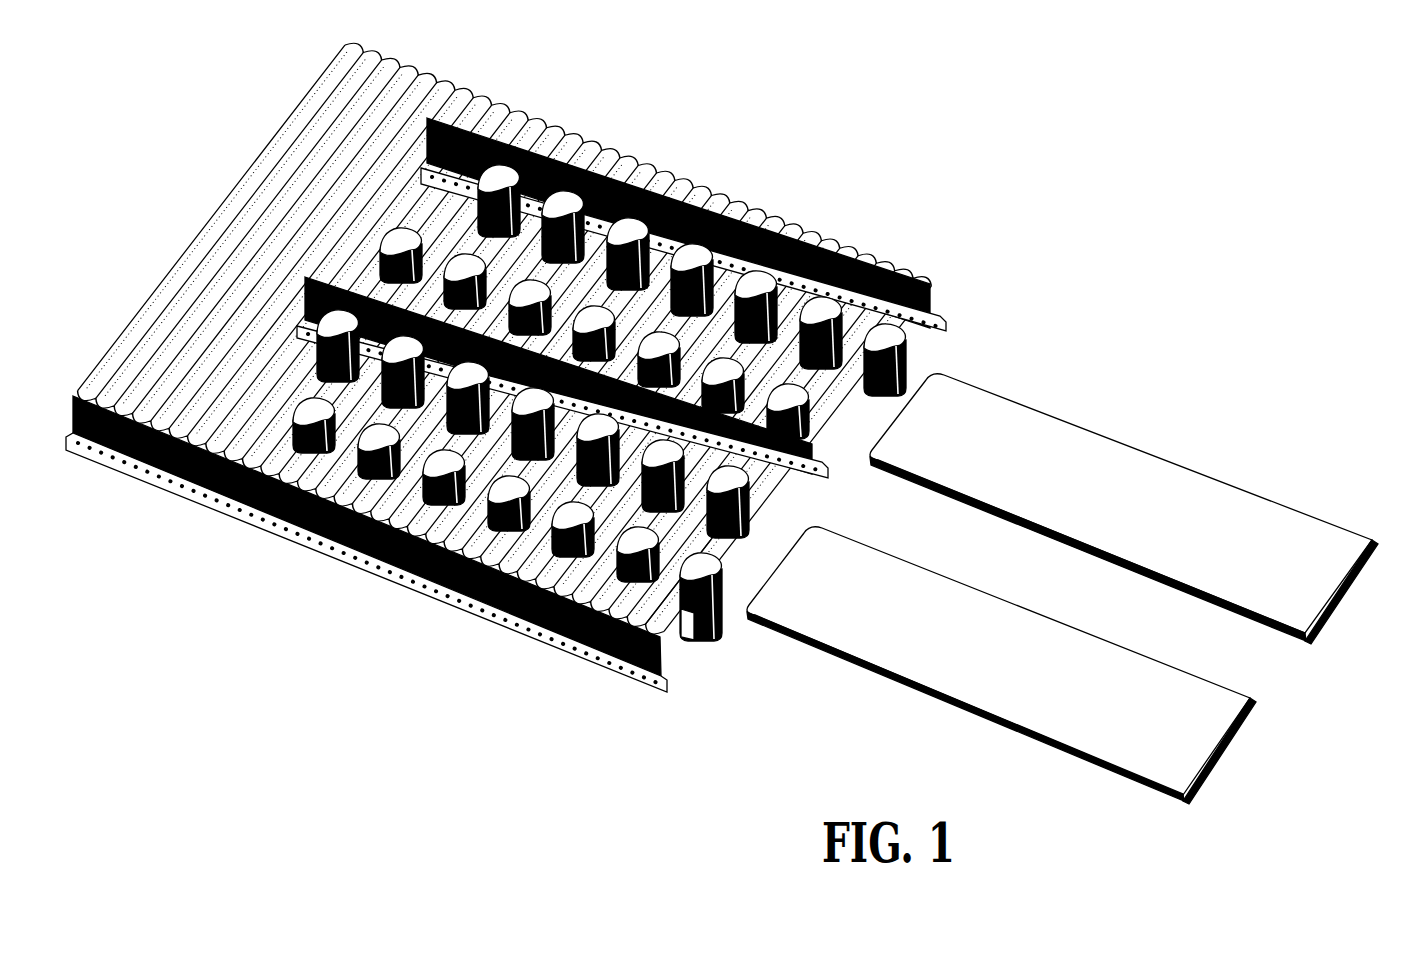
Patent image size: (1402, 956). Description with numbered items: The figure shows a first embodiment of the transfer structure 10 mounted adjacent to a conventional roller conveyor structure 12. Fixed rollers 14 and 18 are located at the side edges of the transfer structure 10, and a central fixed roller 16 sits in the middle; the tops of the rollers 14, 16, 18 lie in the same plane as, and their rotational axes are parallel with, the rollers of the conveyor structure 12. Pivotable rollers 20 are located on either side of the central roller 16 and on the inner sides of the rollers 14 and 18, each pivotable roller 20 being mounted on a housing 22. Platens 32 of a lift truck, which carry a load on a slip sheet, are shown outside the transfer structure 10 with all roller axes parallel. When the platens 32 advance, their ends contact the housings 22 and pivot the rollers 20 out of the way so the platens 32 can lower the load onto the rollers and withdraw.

The transfer structure 10 is at (506, 401).
The roller conveyor structure 12 is at (200, 219).
The fixed roller 14 is at (760, 233).
The central fixed roller 16 is at (797, 447).
The fixed roller 18 is at (648, 597).
The pivotable roller 20 is at (570, 508).
The housing 22 is at (718, 592).
The platen 32 is at (1047, 485).